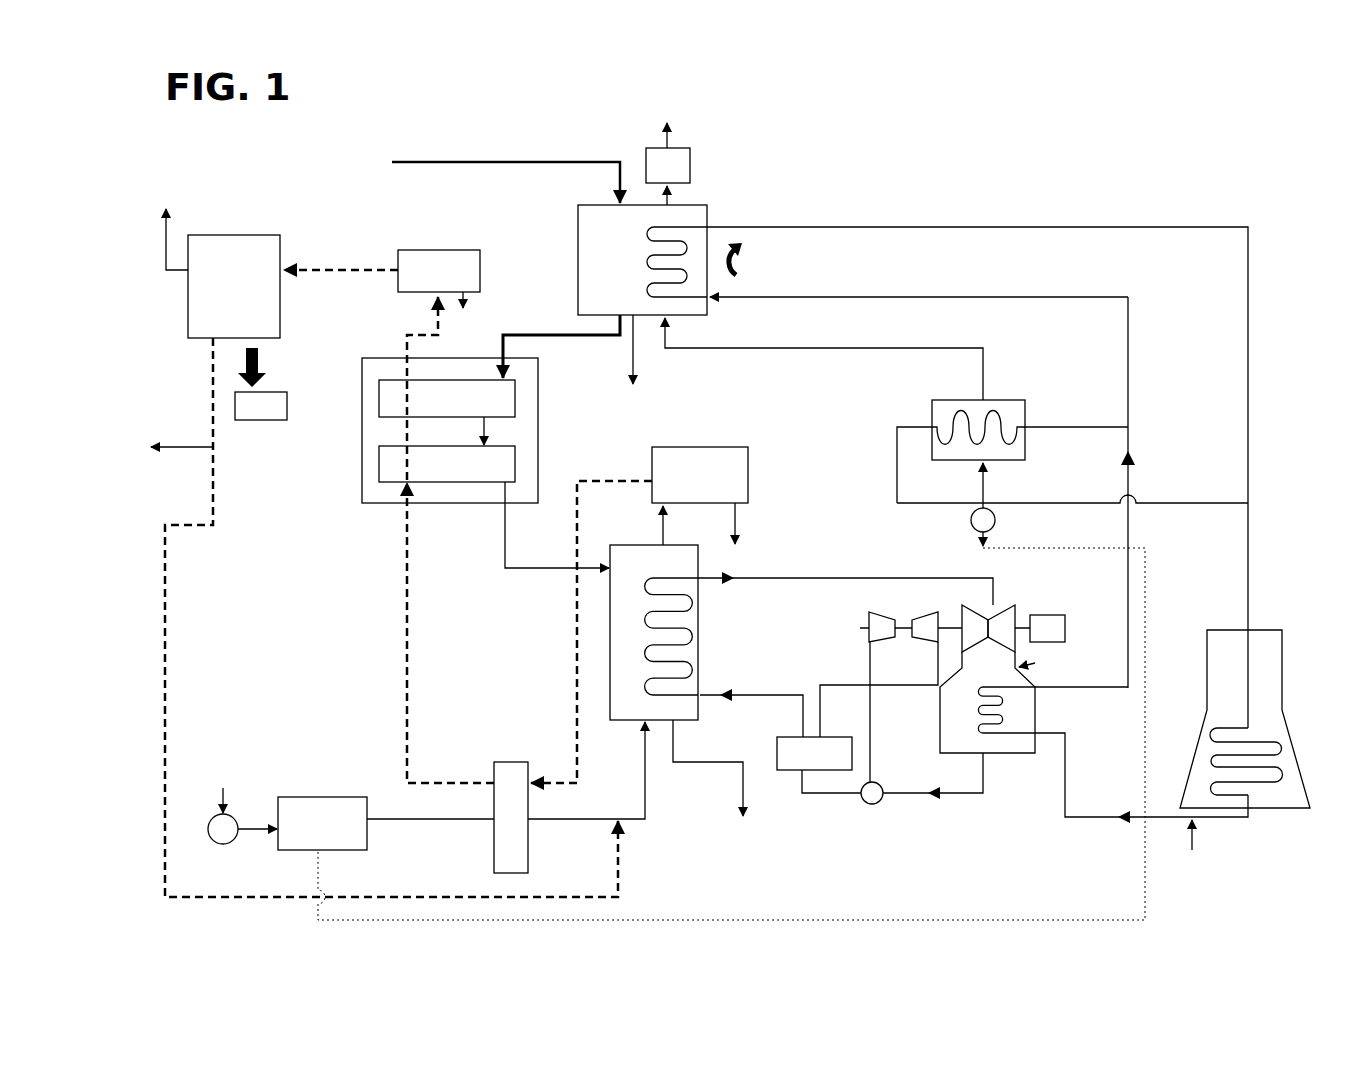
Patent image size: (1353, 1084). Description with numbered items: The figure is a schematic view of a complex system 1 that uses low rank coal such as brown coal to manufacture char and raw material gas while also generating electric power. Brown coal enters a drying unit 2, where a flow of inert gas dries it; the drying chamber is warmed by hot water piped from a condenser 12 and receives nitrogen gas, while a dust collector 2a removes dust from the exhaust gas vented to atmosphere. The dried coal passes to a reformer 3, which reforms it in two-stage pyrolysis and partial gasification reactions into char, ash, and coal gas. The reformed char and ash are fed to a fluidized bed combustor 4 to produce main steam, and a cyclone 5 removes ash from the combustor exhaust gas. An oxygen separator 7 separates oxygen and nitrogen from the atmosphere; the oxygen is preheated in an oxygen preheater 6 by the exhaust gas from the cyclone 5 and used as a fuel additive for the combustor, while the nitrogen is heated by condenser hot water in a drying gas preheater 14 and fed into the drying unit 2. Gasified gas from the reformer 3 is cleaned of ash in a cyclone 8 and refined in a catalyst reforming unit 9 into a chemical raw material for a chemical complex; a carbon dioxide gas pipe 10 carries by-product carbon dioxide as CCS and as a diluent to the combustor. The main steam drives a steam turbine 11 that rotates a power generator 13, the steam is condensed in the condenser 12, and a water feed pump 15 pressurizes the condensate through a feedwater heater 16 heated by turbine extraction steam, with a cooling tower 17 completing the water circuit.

The complex system 1 is at (774, 134).
The drying unit 2 is at (707, 213).
The dust collector 2a is at (690, 152).
The reformer 3 is at (362, 400).
The fluidized bed combustor 4 is at (698, 625).
The cyclone 5 is at (748, 452).
The oxygen preheater 6 is at (528, 850).
The oxygen separator 7 is at (290, 797).
The cyclone 8 is at (438, 250).
The catalyst reforming unit 9 is at (250, 235).
The carbon dioxide gas pipe 10 is at (213, 355).
The steam turbine 11 is at (988, 606).
The condenser 12 is at (1020, 753).
The power generator 13 is at (1047, 615).
The drying gas preheater 14 is at (1025, 408).
The water feed pump 15 is at (875, 805).
The feedwater heater 16 is at (820, 770).
The cooling tower 17 is at (1268, 808).